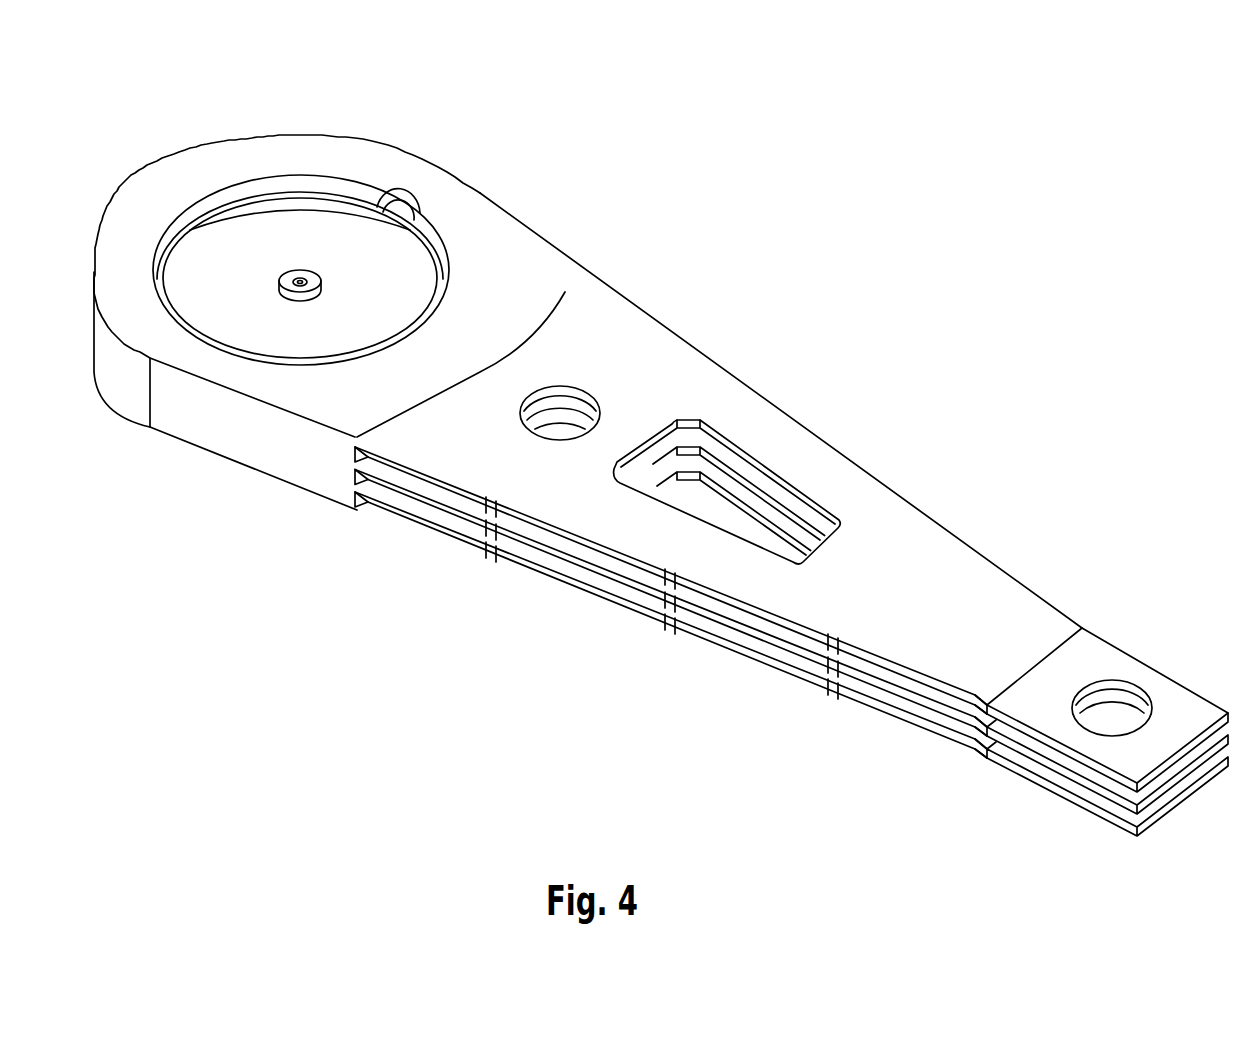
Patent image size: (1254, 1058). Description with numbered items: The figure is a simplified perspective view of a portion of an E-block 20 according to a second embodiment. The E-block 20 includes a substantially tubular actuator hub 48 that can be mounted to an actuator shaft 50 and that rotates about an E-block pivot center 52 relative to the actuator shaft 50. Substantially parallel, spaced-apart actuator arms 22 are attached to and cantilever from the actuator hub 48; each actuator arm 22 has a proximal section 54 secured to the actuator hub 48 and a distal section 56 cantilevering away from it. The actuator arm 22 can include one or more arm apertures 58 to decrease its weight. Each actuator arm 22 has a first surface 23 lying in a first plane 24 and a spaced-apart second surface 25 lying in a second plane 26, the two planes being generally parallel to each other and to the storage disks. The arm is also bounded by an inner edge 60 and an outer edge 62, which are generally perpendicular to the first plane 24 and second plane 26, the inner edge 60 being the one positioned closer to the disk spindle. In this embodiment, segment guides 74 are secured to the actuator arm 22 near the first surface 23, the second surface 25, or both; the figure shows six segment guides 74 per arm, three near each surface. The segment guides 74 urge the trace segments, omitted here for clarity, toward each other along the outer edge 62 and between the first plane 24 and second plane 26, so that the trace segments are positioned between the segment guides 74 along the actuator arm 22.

The E-block 20 is at (821, 257).
The actuator arm 22 is at (898, 533).
The first surface 23 is at (959, 596).
The first plane 24 is at (1053, 607).
The second surface 25 is at (972, 705).
The second plane 26 is at (716, 618).
The actuator hub 48 is at (320, 210).
The actuator shaft 50 is at (322, 289).
The E-block pivot center 52 is at (297, 279).
The proximal section 54 is at (565, 292).
The distal section 56 is at (1140, 678).
The arm aperture 58 is at (567, 413).
The inner edge 60 is at (836, 447).
The outer edge 62 is at (513, 555).
The segment guide 74 is at (487, 525).